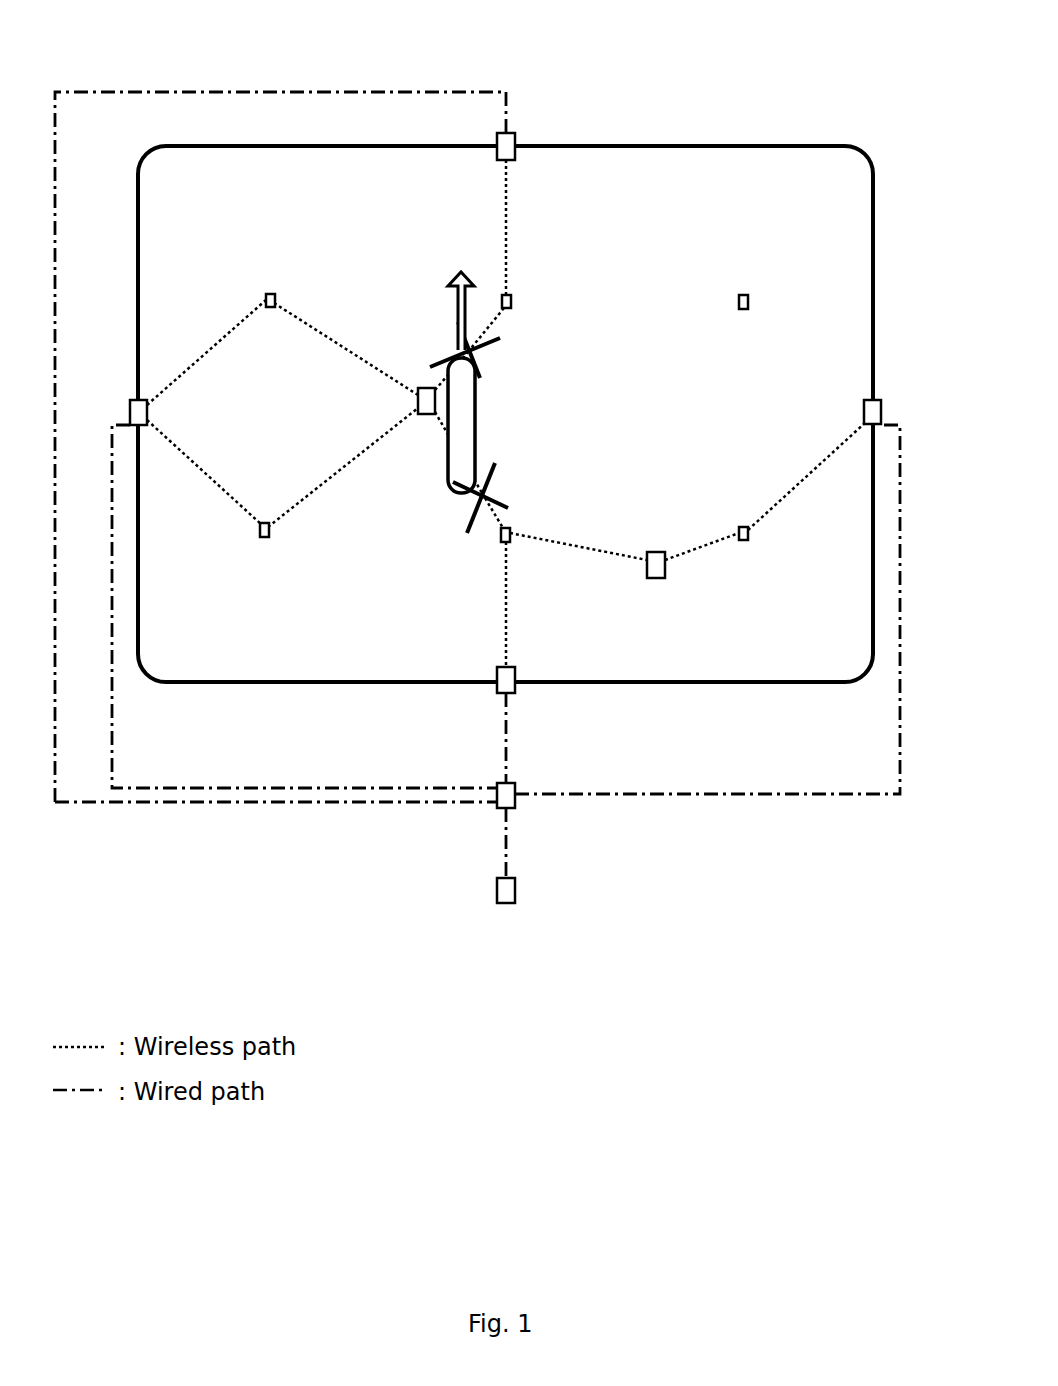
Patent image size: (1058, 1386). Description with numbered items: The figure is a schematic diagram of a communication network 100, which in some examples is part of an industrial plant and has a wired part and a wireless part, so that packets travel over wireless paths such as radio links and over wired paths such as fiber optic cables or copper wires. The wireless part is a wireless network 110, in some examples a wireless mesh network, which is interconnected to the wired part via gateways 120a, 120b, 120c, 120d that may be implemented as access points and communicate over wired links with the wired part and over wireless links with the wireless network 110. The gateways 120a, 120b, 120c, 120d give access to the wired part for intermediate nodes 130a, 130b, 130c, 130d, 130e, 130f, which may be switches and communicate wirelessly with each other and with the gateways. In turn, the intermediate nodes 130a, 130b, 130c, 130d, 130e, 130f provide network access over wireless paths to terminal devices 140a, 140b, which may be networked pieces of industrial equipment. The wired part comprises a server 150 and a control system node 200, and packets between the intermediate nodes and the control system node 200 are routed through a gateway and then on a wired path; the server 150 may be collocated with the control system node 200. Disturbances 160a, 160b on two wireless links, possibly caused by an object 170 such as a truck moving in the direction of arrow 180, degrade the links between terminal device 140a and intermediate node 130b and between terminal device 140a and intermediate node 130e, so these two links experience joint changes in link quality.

The communication network 100 is at (776, 73).
The wireless network 110 is at (873, 225).
The gateway 120a is at (515, 140).
The gateway 120b is at (130, 407).
The gateway 120c is at (881, 404).
The gateway 120d is at (497, 690).
The intermediate node 130a is at (270, 293).
The intermediate node 130b is at (506, 294).
The intermediate node 130c is at (743, 294).
The intermediate node 130d is at (265, 522).
The intermediate node 130e is at (501, 540).
The intermediate node 130f is at (743, 526).
The terminal device 140a is at (418, 402).
The terminal device 140b is at (647, 568).
The server 150 is at (512, 808).
The disturbance 160a is at (492, 486).
The disturbance 160b is at (460, 348).
The object 170 is at (475, 421).
The arrow 180 is at (452, 292).
The control system node 200 is at (500, 904).